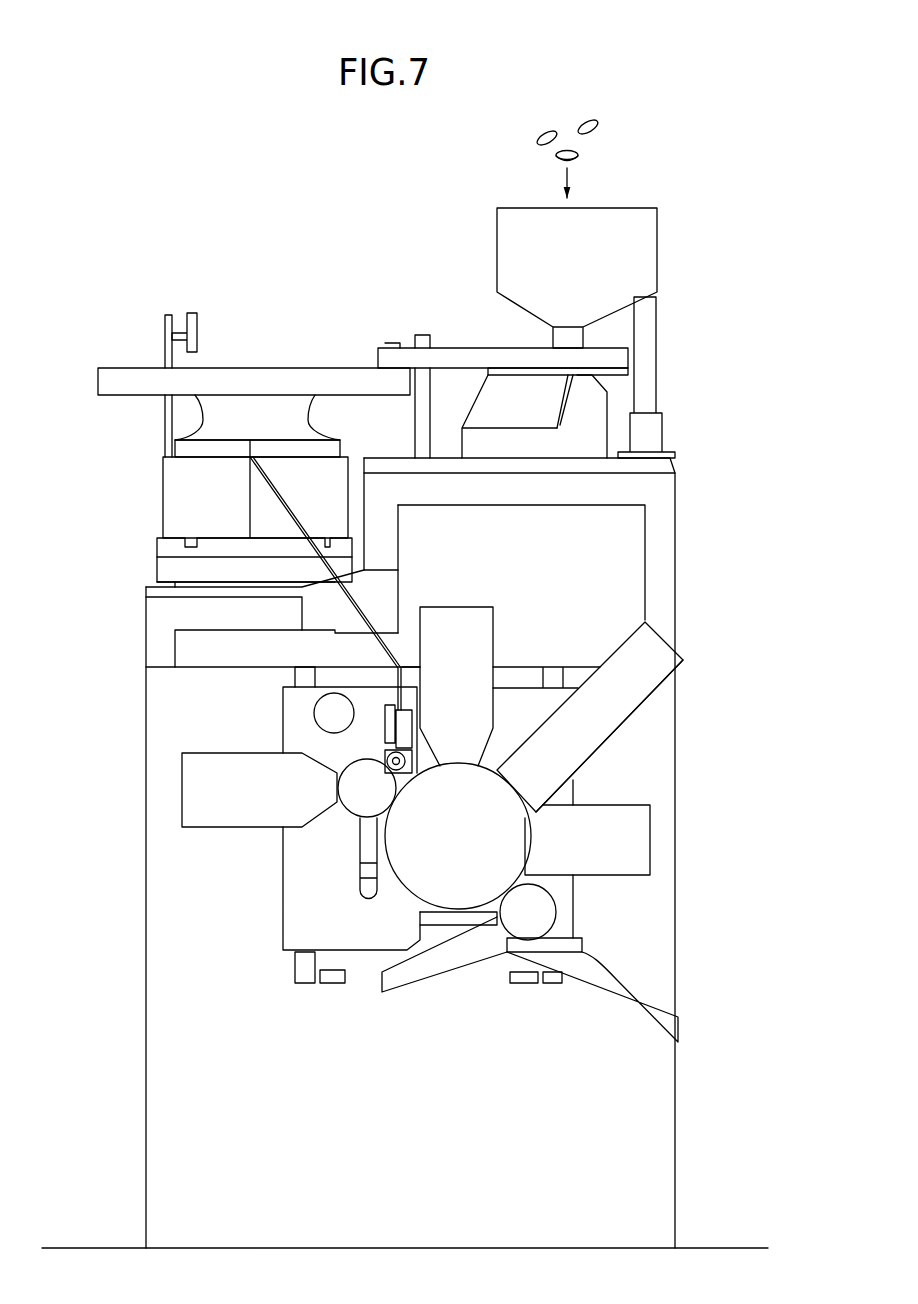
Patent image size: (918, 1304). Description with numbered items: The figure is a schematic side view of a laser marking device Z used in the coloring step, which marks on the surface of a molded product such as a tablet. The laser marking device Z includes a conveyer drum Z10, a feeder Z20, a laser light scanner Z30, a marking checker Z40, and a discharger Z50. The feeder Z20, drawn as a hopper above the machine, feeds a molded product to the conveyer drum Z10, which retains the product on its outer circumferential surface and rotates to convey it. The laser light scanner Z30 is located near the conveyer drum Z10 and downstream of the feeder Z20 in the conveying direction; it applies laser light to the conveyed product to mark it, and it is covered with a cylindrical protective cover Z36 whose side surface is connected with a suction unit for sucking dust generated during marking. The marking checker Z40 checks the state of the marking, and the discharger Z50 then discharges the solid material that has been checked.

The laser marking device Z is at (388, 308).
The conveyer drum Z10 is at (396, 908).
The feeder Z20 is at (487, 318).
The laser light scanner Z30 is at (633, 665).
The protective cover Z36 is at (644, 713).
The marking checker Z40 is at (637, 889).
The discharger Z50 is at (602, 1017).